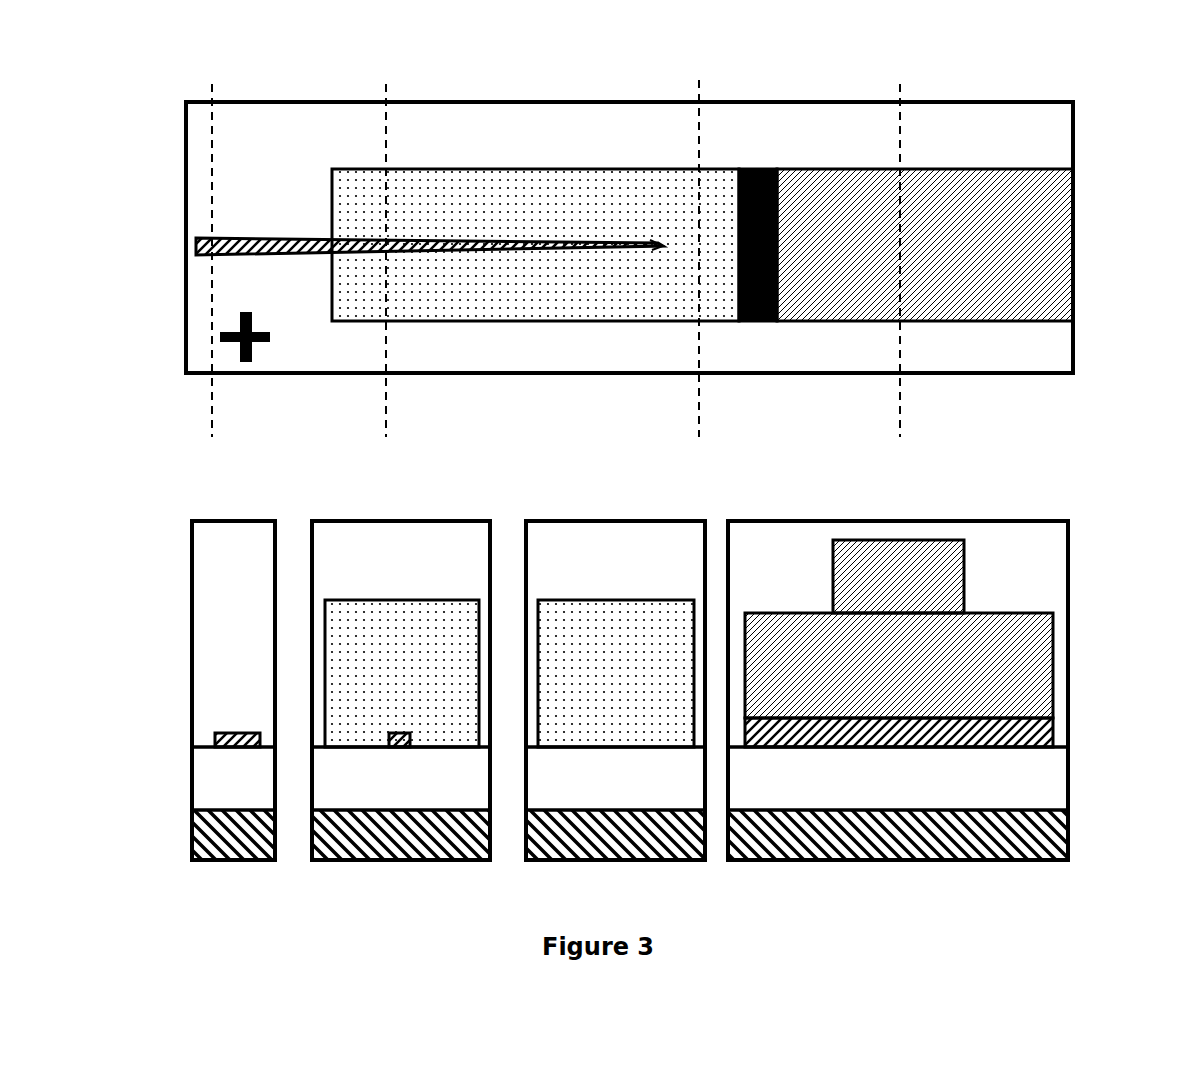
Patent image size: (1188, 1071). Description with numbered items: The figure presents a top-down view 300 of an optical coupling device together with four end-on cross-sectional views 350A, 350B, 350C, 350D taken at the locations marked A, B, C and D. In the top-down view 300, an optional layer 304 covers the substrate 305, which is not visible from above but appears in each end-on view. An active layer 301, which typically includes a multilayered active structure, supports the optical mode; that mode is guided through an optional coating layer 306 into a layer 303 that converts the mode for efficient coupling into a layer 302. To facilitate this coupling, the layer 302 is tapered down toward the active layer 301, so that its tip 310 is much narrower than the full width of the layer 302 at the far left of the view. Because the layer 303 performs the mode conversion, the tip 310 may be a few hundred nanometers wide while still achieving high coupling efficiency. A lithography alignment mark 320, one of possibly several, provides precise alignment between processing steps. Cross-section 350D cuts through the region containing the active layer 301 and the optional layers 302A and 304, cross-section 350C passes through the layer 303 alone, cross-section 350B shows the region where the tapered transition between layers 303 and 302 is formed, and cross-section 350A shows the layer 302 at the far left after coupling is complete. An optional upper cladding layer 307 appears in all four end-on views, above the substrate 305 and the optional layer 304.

The top-down view 300 is at (100, 108).
The active layer 301 is at (1030, 180).
The tapered layer 302 is at (212, 238).
The optional layer 302A is at (1053, 727).
The mode conversion layer 303 is at (527, 193).
The optional layer 304 is at (345, 115).
The substrate 305 is at (208, 845).
The optional coating layer 306 is at (765, 168).
The optional upper cladding layer 307 is at (630, 634).
The taper tip 310 is at (663, 246).
The lithography alignment mark 320 is at (222, 337).
The cross-sectional view A 350A is at (162, 550).
The cross-sectional view B 350B is at (405, 505).
The cross-sectional view C 350C is at (582, 505).
The cross-sectional view D 350D is at (894, 505).